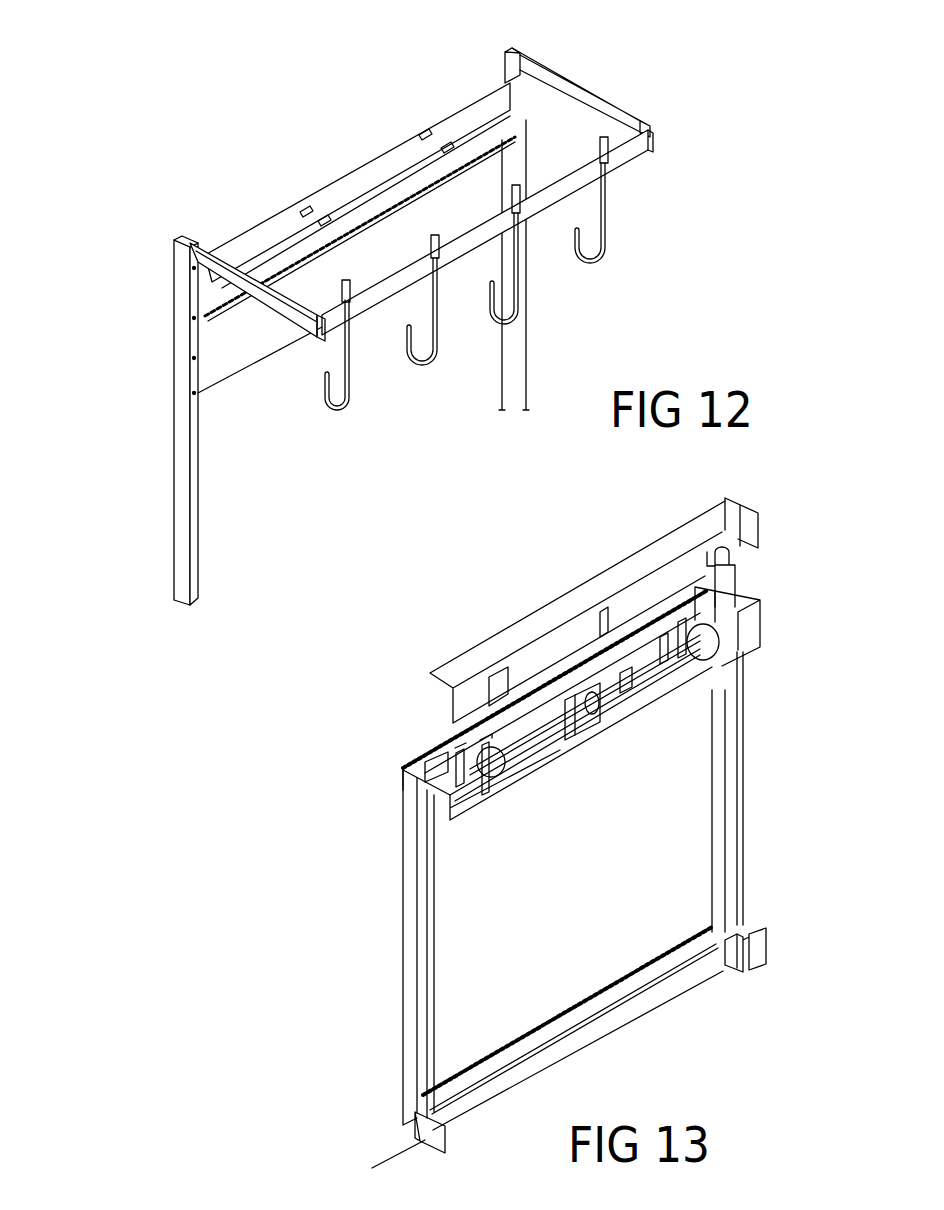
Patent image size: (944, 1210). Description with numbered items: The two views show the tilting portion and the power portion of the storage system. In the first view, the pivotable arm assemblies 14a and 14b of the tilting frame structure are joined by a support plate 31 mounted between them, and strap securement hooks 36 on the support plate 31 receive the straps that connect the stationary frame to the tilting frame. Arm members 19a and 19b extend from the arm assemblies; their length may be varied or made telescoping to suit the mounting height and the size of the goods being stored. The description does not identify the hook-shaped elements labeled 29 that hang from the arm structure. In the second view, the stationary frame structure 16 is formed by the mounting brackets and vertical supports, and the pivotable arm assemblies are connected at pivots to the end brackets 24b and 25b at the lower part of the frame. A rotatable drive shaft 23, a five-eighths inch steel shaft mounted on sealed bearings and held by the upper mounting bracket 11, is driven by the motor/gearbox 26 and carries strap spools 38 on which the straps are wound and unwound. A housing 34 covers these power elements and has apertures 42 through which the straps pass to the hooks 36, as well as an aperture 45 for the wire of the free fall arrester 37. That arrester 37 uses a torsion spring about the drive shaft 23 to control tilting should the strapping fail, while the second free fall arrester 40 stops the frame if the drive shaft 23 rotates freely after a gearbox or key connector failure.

In FIG. 13, the upper mounting bracket 11 is at (440, 757).
In FIG. 12, the pivotable arm assembly 14a is at (161, 367).
In FIG. 12, the pivotable arm assembly 14b is at (605, 81).
In FIG. 13, the stationary frame structure 16 is at (385, 888).
In FIG. 12, the arm member 19a is at (270, 312).
In FIG. 12, the arm member 19b is at (625, 114).
In FIG. 12, the rotatable drive shaft 23 is at (383, 285).
In FIG. 13, the rotatable drive shaft 23 is at (533, 747).
In FIG. 13, the end bracket 24b is at (422, 1138).
In FIG. 13, the end bracket 25b is at (767, 940).
In FIG. 13, the motor/gearbox 26 is at (749, 584).
In FIG. 12, the hooks 29 is at (620, 223).
In FIG. 12, the support plate 31 is at (202, 290).
In FIG. 13, the housing 34 is at (648, 555).
In FIG. 12, the strap securement hooks 36 is at (430, 130).
In FIG. 13, the free fall arrester 37 is at (613, 698).
In FIG. 13, the strap spools 38 is at (490, 763).
In FIG. 13, the free fall arrester 40 is at (583, 723).
In FIG. 13, the apertures 42 is at (498, 683).
In FIG. 13, the aperture 45 is at (603, 610).